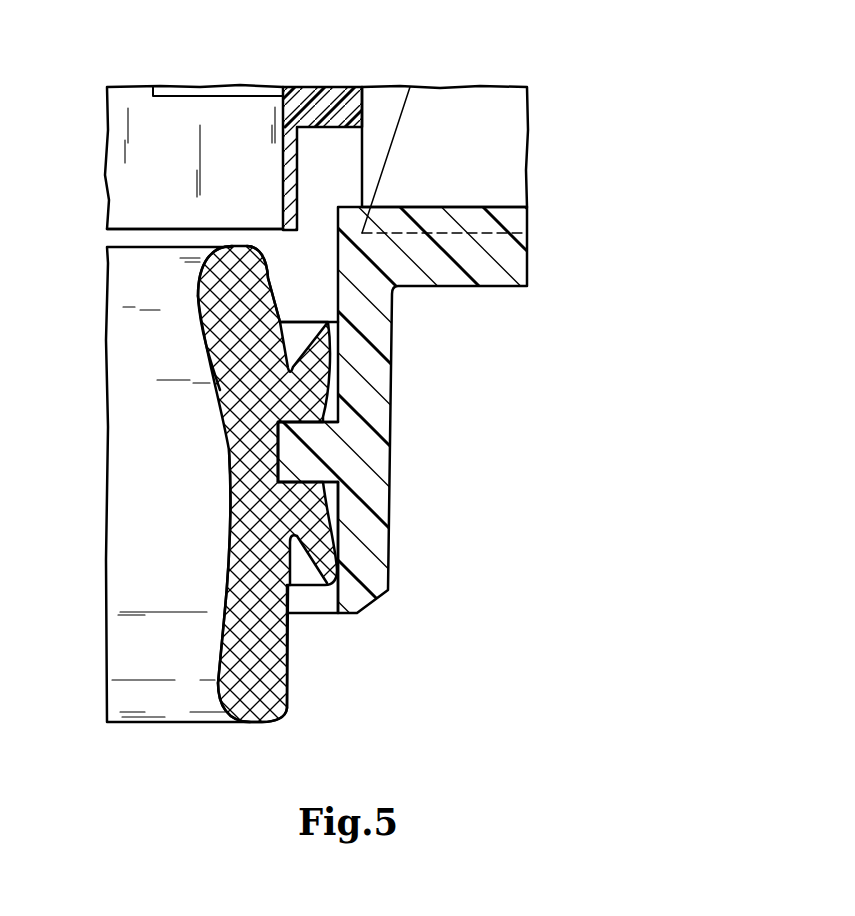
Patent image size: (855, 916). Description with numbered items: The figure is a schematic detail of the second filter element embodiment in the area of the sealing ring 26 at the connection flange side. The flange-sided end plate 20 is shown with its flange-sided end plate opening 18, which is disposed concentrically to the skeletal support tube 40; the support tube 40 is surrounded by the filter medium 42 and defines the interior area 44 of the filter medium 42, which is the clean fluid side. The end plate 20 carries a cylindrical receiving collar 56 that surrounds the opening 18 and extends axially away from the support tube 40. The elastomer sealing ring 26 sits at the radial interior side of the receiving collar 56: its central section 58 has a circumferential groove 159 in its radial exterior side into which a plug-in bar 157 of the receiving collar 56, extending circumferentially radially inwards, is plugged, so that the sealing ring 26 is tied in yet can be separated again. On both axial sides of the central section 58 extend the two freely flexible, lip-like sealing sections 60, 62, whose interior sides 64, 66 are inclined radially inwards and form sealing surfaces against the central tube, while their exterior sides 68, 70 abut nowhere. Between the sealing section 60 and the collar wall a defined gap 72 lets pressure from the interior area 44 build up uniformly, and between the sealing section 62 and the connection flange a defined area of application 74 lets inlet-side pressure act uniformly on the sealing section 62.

The flange-sided end plate opening 18 is at (153, 228).
The flange-sided end plate 20 is at (510, 262).
The sealing ring 26 is at (200, 411).
The support tube 40 is at (312, 100).
The filter medium 42 is at (475, 120).
The interior area 44 is at (148, 133).
The receiving collar 56 is at (367, 524).
The central section 58 is at (262, 458).
The sealing section 60 is at (209, 289).
The sealing section 62 is at (250, 690).
The interior side 64 is at (203, 316).
The interior side 66 is at (212, 642).
The exterior side 68 is at (270, 291).
The exterior side 70 is at (286, 636).
The gap 72 is at (316, 253).
The area of application 74 is at (312, 676).
The plug-in bar 157 is at (315, 443).
The circumferential groove 159 is at (304, 481).